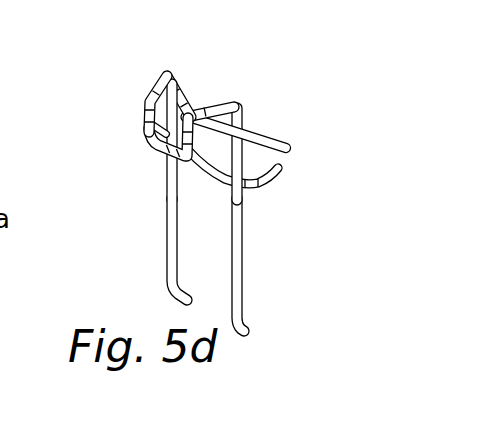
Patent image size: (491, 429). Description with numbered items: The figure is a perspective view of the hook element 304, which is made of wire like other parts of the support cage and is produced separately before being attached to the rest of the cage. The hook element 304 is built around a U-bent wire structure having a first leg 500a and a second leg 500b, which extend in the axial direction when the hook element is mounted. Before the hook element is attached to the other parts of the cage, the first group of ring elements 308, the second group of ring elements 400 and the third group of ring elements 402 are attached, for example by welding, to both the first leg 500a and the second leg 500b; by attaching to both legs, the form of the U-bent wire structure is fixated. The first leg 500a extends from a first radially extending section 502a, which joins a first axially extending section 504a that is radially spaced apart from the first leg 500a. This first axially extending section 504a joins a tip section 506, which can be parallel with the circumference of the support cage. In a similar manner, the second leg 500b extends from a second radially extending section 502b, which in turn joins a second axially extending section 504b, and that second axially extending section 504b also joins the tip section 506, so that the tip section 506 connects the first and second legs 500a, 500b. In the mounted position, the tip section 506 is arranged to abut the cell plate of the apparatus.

The hook element 304 is at (190, 169).
The first group of ring elements 308 is at (193, 103).
The second group of ring elements 400 is at (167, 178).
The third group of ring elements 402 is at (250, 135).
The first leg 500a is at (172, 235).
The second leg 500b is at (237, 252).
The first radially extending section 502a is at (172, 78).
The second radially extending section 502b is at (239, 136).
The first axially extending section 504a is at (150, 126).
The second axially extending section 504b is at (235, 185).
The tip section 506 is at (158, 148).